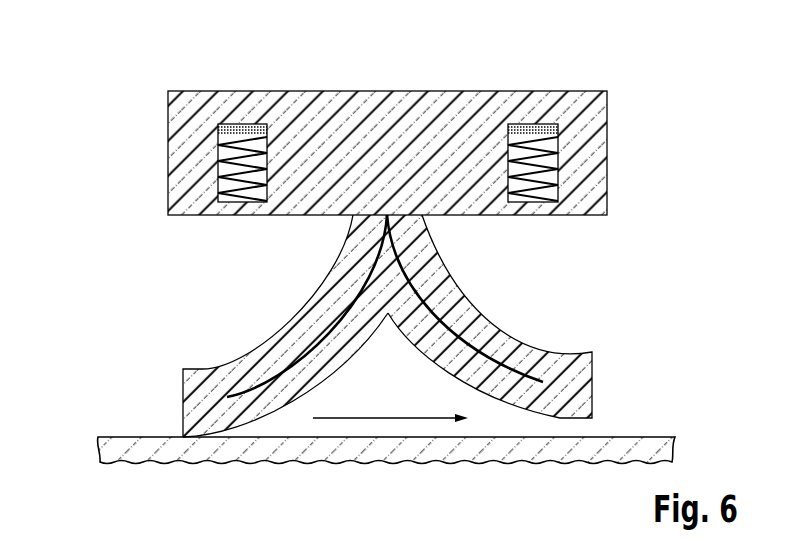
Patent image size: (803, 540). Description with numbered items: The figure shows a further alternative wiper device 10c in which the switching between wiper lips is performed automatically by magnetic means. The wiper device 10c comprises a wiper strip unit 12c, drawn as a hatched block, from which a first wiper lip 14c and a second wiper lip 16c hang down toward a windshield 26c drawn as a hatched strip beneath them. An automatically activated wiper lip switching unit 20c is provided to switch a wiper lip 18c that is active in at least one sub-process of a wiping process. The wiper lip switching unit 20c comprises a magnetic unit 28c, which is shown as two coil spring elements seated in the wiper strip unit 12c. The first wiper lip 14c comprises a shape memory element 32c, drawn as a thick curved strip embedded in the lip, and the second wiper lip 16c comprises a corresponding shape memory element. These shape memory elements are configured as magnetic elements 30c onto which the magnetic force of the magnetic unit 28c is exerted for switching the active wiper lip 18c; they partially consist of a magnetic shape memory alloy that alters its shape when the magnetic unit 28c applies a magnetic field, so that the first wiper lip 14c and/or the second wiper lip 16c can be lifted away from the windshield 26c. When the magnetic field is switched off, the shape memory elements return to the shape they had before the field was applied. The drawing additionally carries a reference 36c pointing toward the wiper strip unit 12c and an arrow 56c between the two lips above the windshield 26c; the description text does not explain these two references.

The wiper device 10c is at (120, 54).
The wiper strip unit 12c is at (400, 100).
The first wiper lip 14c is at (197, 378).
The second wiper lip 16c is at (580, 368).
The active wiper lip 18c is at (190, 407).
The wiper lip switching unit 20c is at (387, 260).
The windshield 26c is at (538, 453).
The magnetic unit 28c is at (191, 162).
The magnetic elements 30c is at (390, 306).
The shape memory element 32c is at (317, 352).
The actuator unit 36c is at (656, 60).
The direction of movement 56c is at (392, 416).